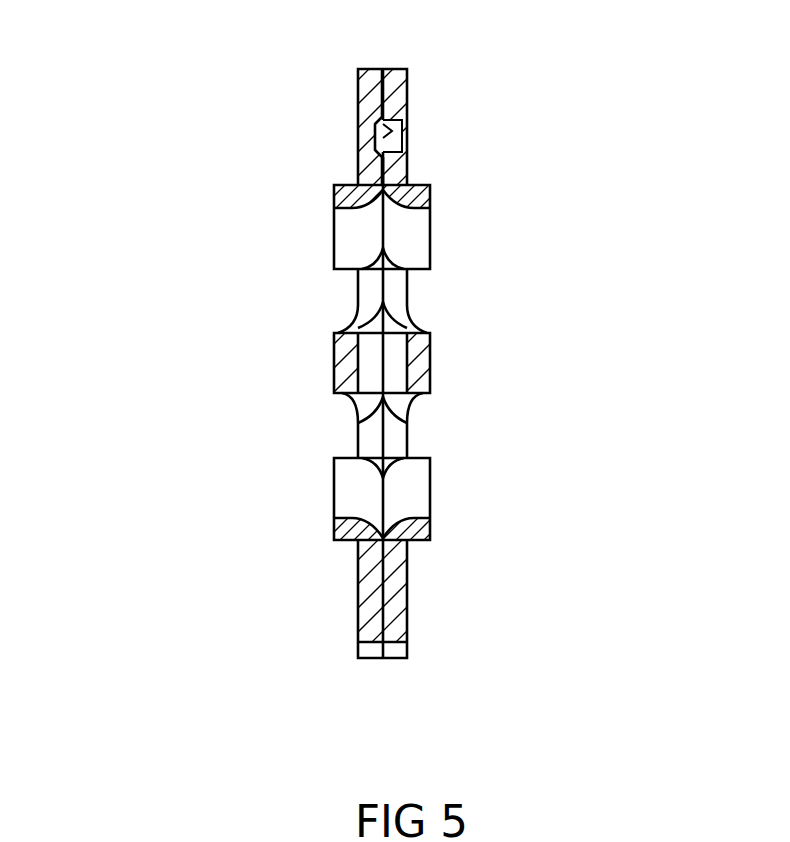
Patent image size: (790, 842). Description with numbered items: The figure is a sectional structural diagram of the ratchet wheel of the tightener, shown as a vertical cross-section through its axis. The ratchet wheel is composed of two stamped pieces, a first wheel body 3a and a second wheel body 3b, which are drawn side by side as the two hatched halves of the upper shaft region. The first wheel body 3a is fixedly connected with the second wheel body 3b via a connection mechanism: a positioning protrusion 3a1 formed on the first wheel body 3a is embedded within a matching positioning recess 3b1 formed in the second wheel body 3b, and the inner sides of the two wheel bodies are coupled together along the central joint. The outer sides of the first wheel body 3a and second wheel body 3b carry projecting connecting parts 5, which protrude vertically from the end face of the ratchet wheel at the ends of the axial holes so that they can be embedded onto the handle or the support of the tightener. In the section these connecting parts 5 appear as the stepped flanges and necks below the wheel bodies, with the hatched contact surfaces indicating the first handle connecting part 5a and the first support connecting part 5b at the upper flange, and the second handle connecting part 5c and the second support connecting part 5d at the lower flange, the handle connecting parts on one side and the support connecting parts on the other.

The first wheel body 3a is at (374, 98).
The second wheel body 3b is at (395, 92).
The positioning protrusion 3a1 is at (385, 129).
The positioning recess 3b1 is at (396, 128).
The connecting part 5 is at (334, 203).
The first handle connecting part 5a is at (352, 208).
The first support connecting part 5b is at (418, 208).
The second handle connecting part 5c is at (334, 532).
The second support connecting part 5d is at (432, 530).